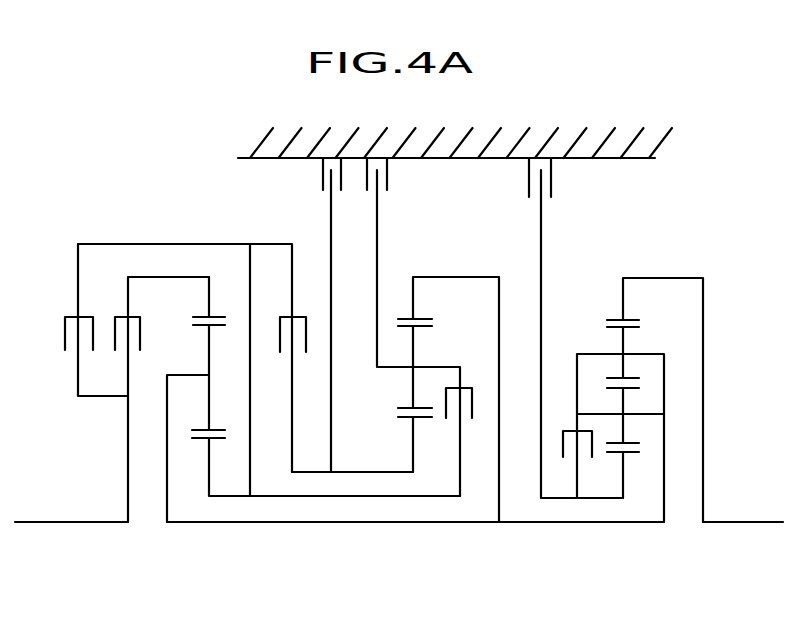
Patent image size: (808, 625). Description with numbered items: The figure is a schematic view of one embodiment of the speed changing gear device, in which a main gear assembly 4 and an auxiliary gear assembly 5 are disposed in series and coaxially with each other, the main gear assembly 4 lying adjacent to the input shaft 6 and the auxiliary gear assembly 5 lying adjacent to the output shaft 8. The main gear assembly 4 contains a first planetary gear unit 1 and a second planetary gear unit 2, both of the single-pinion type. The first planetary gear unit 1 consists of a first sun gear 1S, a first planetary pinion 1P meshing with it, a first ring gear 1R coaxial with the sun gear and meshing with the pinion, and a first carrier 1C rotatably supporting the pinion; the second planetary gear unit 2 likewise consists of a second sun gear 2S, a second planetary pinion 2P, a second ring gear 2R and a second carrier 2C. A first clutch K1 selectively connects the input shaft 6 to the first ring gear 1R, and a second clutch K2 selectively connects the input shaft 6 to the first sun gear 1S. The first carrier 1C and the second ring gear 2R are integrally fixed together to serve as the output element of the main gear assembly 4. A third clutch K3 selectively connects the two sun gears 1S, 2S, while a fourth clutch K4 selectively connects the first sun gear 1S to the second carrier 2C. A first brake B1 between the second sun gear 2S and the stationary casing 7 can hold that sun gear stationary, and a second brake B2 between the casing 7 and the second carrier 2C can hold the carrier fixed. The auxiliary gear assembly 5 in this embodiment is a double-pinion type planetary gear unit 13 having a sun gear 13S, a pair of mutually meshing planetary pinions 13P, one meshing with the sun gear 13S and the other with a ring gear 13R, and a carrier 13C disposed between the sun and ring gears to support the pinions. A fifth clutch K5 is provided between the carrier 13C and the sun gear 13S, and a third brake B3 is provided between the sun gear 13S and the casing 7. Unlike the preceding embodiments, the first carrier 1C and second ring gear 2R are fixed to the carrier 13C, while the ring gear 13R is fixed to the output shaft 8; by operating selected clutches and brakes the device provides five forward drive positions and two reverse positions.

The transmission casing 7 is at (643, 152).
The first brake B1 is at (305, 315).
The second brake B2 is at (413, 327).
The third brake B3 is at (576, 328).
The input shaft 6 is at (40, 520).
The output shaft 8 is at (752, 520).
The first clutch K1 is at (162, 399).
The second clutch K2 is at (77, 320).
The third clutch K3 is at (205, 358).
The fourth clutch K4 is at (466, 375).
The fifth clutch K5 is at (563, 443).
The first planetary gear unit 1 is at (193, 446).
The first ring gear 1R is at (222, 314).
The first carrier 1C is at (185, 375).
The first planetary pinion 1P is at (210, 412).
The first sun gear 1S is at (216, 440).
The second planetary gear unit 2 is at (422, 472).
The second ring gear 2R is at (425, 318).
The second carrier 2C is at (395, 368).
The second planetary pinion 2P is at (402, 326).
The second sun gear 2S is at (405, 420).
The double-pinion type planetary gear unit 13 is at (648, 324).
The ring gear 13R is at (608, 317).
The carrier 13C is at (582, 352).
The planetary pinions 13P is at (623, 403).
The sun gear 13S is at (628, 456).
The main gear assembly 4 is at (222, 583).
The auxiliary gear assembly 5 is at (545, 566).